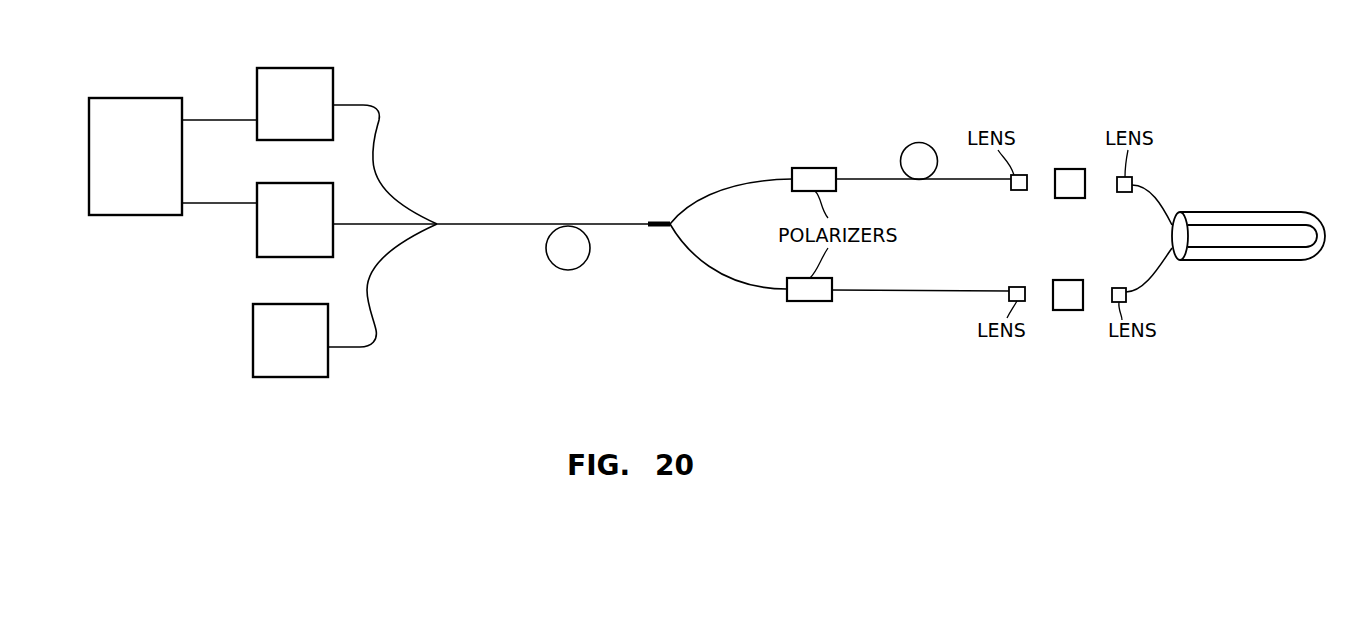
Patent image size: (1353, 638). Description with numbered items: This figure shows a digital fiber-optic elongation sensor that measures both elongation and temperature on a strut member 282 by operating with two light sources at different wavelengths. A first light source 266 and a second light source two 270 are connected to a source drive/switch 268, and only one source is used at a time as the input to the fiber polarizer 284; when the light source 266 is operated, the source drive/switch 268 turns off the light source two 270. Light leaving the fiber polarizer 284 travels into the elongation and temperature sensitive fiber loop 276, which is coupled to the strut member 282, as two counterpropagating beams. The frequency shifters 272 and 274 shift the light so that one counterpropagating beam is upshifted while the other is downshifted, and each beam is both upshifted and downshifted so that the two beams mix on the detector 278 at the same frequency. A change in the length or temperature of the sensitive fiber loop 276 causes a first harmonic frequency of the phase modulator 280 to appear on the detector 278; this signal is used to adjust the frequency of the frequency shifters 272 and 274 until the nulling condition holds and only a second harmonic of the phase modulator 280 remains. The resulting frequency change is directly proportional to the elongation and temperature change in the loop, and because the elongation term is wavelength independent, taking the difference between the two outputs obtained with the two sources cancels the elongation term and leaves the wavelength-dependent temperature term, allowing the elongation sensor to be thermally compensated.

The light source 266 is at (278, 183).
The source drive/switch 268 is at (112, 215).
The light source two 270 is at (291, 68).
The frequency shifter 272 is at (1068, 311).
The frequency shifter 274 is at (1073, 169).
The sensitive fiber loop 276 is at (1254, 225).
The detector 278 is at (253, 343).
The phase modulator 280 is at (959, 107).
The strut member 282 is at (1303, 260).
The fiber polarizer 284 is at (583, 260).